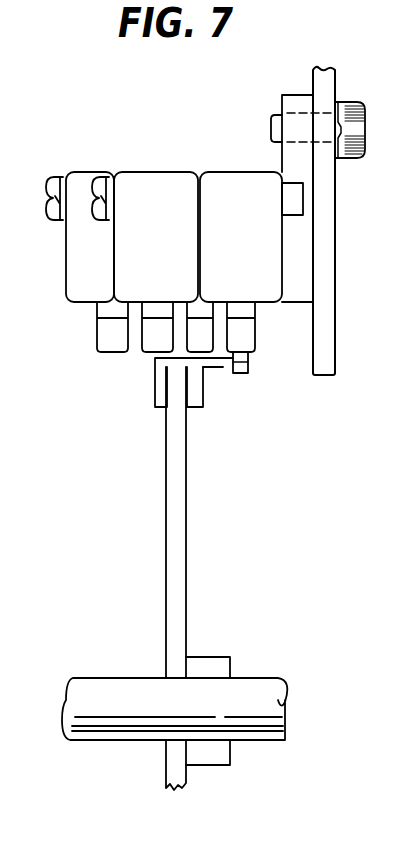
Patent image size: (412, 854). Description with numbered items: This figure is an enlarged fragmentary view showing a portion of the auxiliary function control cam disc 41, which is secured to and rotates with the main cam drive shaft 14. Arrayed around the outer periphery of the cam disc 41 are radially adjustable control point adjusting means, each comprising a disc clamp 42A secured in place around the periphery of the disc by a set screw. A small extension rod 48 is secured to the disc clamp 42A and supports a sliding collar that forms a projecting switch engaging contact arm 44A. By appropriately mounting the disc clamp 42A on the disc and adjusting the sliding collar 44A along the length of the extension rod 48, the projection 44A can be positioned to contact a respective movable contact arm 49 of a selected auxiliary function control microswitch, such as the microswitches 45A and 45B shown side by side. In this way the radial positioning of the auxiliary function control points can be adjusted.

The cam drive shaft 14 is at (92, 700).
The auxiliary function control cam disc 41 is at (187, 543).
The control point adjusting means 42A is at (160, 373).
The switch engaging contact arm 44A is at (250, 355).
The auxiliary function control microswitch 45A is at (243, 188).
The auxiliary function control microswitch 45B is at (153, 197).
The extension rod 48 is at (223, 367).
The movable contact arm 49 is at (243, 333).